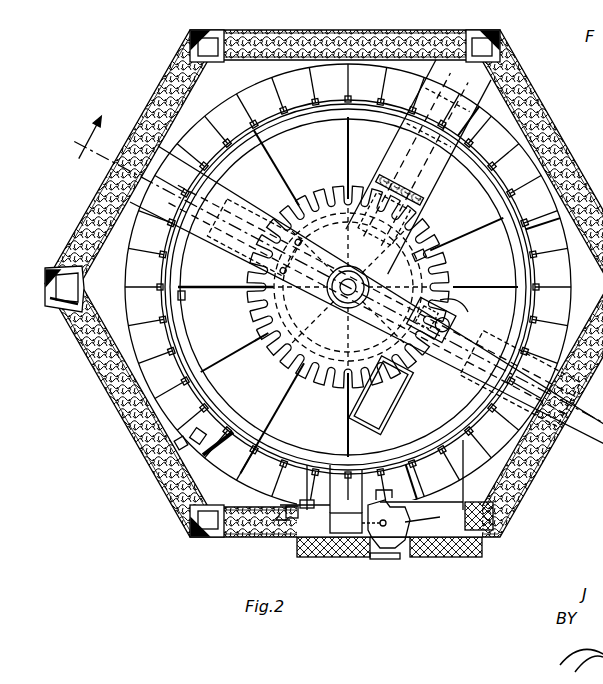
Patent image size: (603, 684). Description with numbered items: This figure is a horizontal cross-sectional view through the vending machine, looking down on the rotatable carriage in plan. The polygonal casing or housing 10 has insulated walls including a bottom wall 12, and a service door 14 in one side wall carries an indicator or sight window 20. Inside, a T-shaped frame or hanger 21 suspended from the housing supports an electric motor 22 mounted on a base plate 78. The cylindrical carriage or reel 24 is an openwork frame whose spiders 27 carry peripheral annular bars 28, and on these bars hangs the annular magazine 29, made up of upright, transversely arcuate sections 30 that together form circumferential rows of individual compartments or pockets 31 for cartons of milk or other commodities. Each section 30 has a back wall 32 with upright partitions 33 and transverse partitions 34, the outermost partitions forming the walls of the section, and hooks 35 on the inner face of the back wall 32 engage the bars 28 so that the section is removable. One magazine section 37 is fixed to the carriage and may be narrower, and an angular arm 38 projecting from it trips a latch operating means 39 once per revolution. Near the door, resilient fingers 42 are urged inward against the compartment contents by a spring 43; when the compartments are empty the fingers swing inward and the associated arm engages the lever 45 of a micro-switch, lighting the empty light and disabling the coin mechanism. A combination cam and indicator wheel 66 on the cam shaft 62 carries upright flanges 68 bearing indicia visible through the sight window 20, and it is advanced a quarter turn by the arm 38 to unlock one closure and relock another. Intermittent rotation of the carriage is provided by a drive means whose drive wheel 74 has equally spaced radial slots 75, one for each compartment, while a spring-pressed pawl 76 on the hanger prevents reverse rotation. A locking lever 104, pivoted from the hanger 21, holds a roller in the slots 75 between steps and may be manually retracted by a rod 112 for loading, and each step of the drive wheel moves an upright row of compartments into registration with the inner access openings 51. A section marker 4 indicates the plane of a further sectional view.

The section line 4- 4 is at (328, 273).
The casing or housing 10 is at (490, 33).
The bottom wall 12 is at (205, 82).
The service door 14 is at (432, 558).
The indicator or sight window 20 is at (380, 560).
The T-shaped frame or hanger 21 is at (248, 196).
The electric motor 22 is at (350, 420).
The cylindrical carriage or reel 24 is at (357, 120).
The spiders 27 is at (460, 228).
The peripheral frame members or annular bars 28 is at (310, 120).
The annular magazine 29 is at (92, 348).
The magazine sections 30 is at (503, 152).
The compartments or pockets 31 is at (128, 275).
The back wall 32 is at (344, 104).
The upright partitions 33 is at (570, 286).
The transverse partitions 34 is at (540, 232).
The hooks 35 is at (185, 297).
The fixed magazine section 37 is at (225, 406).
The angular arm 38 is at (207, 462).
The latch operating means 39 is at (383, 496).
The resilient fingers 42 is at (337, 502).
The spring 43 is at (290, 472).
The switch lever 45 is at (314, 488).
The inner access openings 51 is at (345, 558).
The cam shaft 62 is at (375, 524).
The cam and indicator wheel 66 is at (410, 496).
The upright flanges 68 is at (415, 522).
The drive wheel 74 is at (425, 228).
The radial slots 75 is at (302, 382).
The spring-pressed pawl 76 is at (386, 180).
The base plate 78 is at (420, 392).
The locking lever 104 is at (462, 312).
The rod 112 is at (465, 483).